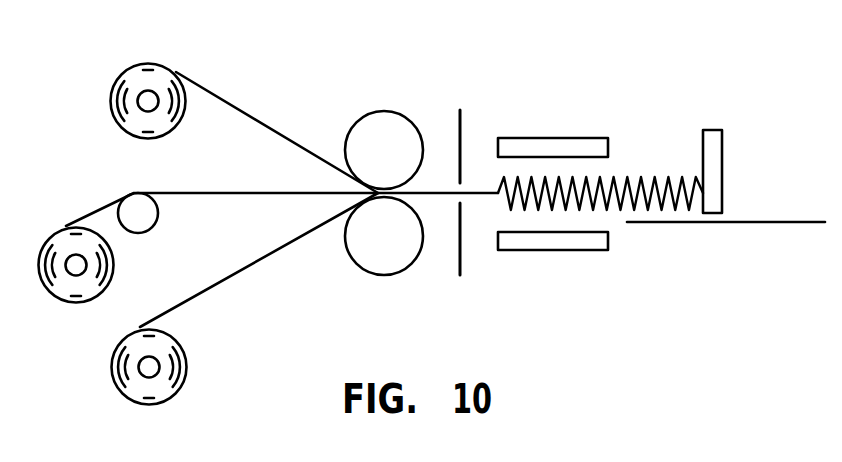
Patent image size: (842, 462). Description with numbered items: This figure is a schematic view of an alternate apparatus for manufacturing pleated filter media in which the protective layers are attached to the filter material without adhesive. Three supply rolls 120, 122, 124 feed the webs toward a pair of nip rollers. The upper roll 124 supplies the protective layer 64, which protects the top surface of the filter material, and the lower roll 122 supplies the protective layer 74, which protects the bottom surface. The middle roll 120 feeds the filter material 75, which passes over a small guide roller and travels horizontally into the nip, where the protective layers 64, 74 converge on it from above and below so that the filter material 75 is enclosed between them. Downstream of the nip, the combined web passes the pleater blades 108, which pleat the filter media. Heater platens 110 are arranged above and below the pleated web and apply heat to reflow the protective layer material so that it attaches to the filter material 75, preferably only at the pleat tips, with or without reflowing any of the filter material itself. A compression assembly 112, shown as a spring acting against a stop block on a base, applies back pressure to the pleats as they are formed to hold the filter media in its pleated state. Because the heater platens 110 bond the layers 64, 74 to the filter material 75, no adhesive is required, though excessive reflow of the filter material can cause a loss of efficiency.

The protective layer 64 is at (217, 93).
The protective layer 74 is at (224, 287).
The filter material 75 is at (247, 191).
The pleater blades 108 is at (464, 253).
The heater platens 110 is at (608, 243).
The compression assembly 112 is at (730, 223).
The supply roll 120 is at (76, 303).
The supply roll 122 is at (182, 382).
The supply roll 124 is at (118, 80).